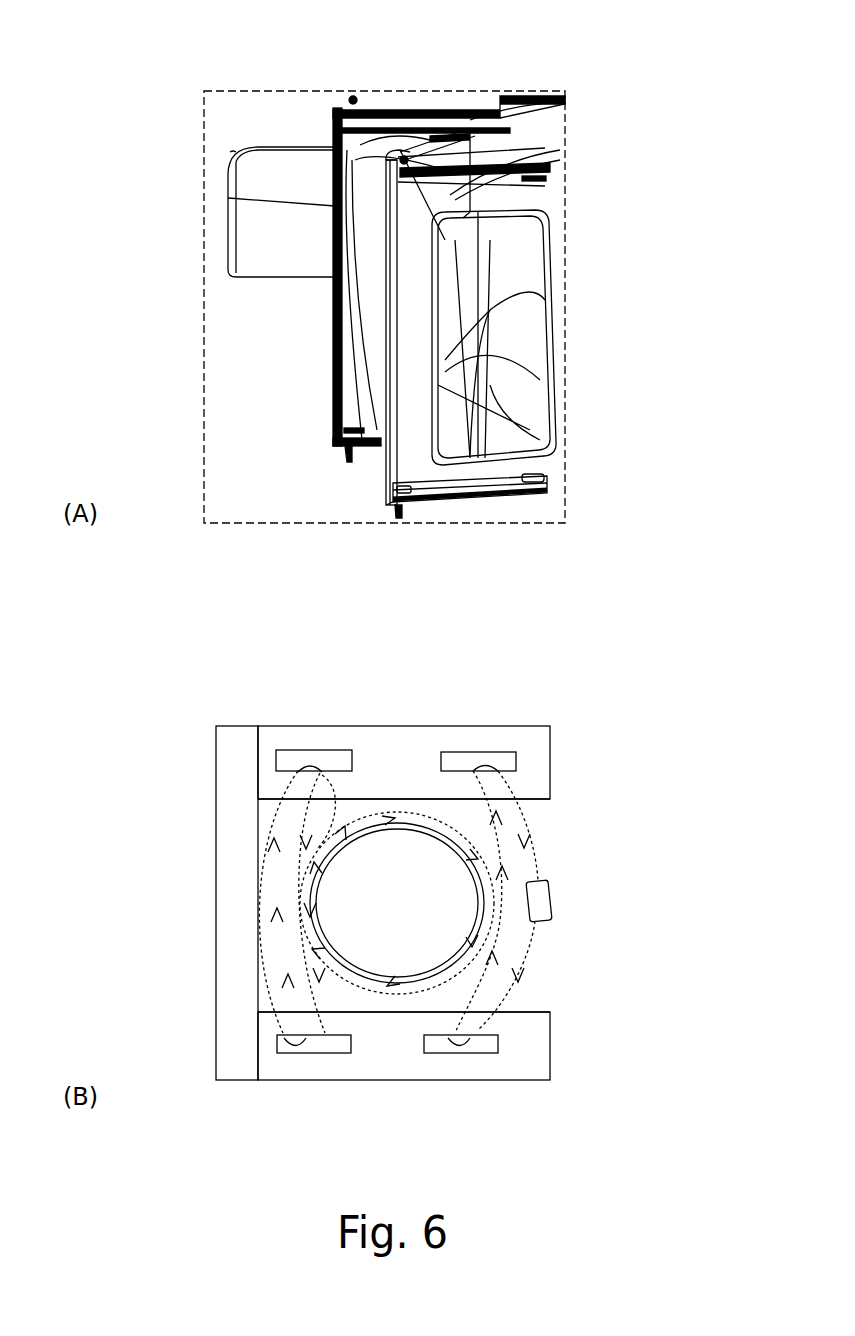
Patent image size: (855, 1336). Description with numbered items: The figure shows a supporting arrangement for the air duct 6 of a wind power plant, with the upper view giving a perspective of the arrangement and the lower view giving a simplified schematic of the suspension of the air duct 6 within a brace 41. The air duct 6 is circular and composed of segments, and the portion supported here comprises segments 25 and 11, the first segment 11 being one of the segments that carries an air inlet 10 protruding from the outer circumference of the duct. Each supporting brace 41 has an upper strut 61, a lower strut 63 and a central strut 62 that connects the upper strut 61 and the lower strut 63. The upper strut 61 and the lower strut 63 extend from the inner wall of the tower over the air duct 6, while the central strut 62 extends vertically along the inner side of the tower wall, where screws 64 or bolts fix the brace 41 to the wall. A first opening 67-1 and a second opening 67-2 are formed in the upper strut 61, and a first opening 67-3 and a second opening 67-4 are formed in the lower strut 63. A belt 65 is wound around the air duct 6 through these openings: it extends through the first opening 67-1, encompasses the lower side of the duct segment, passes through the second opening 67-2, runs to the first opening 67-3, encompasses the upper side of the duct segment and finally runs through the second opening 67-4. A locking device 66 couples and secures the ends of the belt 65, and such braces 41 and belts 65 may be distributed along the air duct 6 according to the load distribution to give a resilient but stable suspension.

In FIG. 6A, the air inlet 10 is at (278, 147).
In FIG. 6A, the first segment 11 is at (222, 262).
In FIG. 6A, the second segment 25 is at (520, 290).
In FIG. 6A, the supporting brace 41 is at (333, 348).
In FIG. 6B, the supporting brace 41 is at (190, 905).
In FIG. 6B, the air duct 6 is at (424, 827).
In FIG. 6A, the upper strut 61 is at (410, 112).
In FIG. 6B, the upper strut 61 is at (280, 745).
In FIG. 6A, the central strut 62 is at (345, 284).
In FIG. 6B, the central strut 62 is at (228, 973).
In FIG. 6A, the lower strut 63 is at (368, 440).
In FIG. 6B, the lower strut 63 is at (272, 1068).
In FIG. 6A, the screw 64 is at (353, 100).
In FIG. 6B, the belt 65 is at (540, 846).
In FIG. 6B, the locking device 66 is at (553, 897).
In FIG. 6A, the first opening in the upper strut 67-1 is at (450, 130).
In FIG. 6B, the first opening in the upper strut 67-1 is at (342, 752).
In FIG. 6A, the second opening in the upper strut 67-2 is at (540, 183).
In FIG. 6B, the second opening in the upper strut 67-2 is at (502, 753).
In FIG. 6A, the first opening in the lower strut 67-3 is at (528, 482).
In FIG. 6B, the first opening in the lower strut 67-3 is at (442, 1046).
In FIG. 6A, the second opening in the lower strut 67-4 is at (412, 503).
In FIG. 6B, the second opening in the lower strut 67-4 is at (340, 1048).